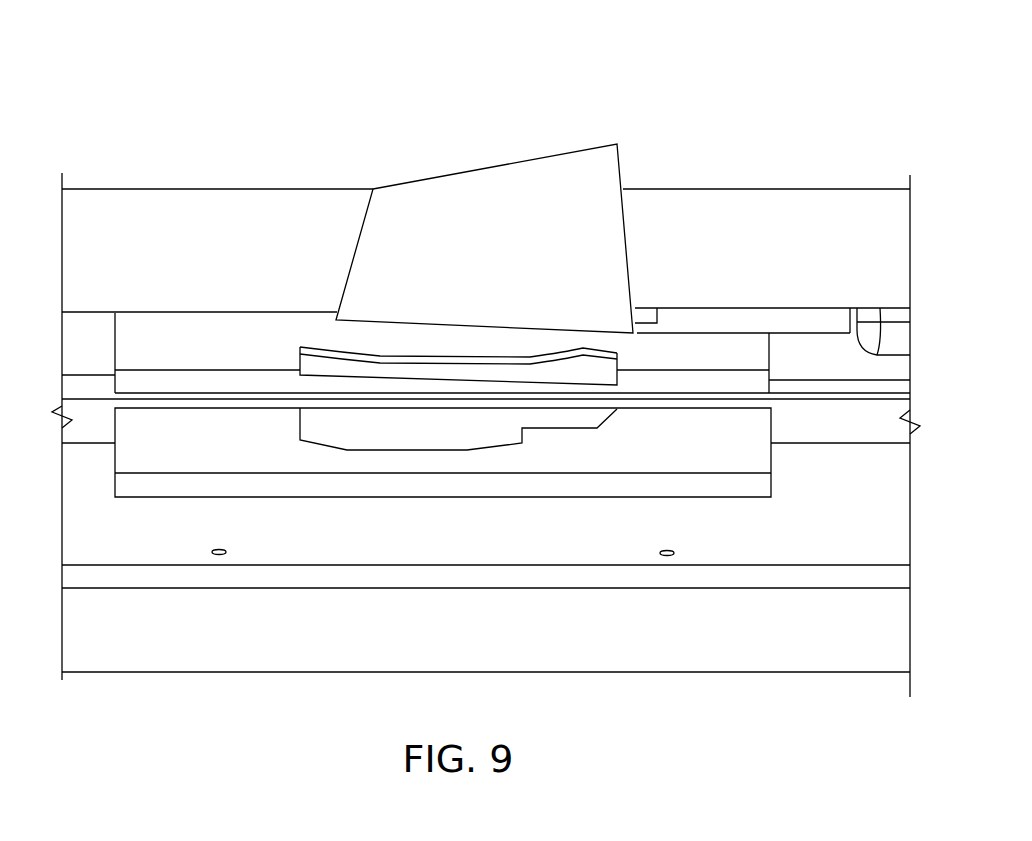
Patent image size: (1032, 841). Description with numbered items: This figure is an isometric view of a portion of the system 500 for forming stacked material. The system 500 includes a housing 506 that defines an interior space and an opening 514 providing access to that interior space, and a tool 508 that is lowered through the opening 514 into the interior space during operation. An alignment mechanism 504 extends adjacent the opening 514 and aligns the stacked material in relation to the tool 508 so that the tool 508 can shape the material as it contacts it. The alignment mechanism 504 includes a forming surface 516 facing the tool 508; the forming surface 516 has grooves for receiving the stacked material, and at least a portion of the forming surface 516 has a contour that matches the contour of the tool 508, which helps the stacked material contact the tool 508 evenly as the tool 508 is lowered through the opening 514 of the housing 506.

The system 500 is at (112, 72).
The alignment mechanism 504 is at (155, 485).
The housing 506 is at (263, 645).
The tool 508 is at (447, 257).
The opening 514 is at (90, 387).
The forming surface 516 is at (538, 363).